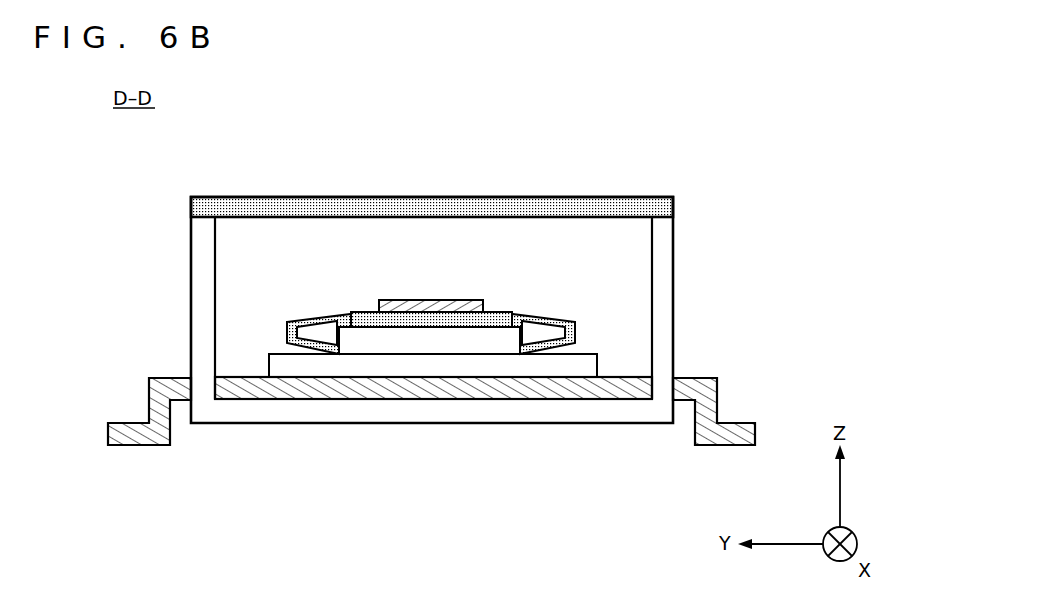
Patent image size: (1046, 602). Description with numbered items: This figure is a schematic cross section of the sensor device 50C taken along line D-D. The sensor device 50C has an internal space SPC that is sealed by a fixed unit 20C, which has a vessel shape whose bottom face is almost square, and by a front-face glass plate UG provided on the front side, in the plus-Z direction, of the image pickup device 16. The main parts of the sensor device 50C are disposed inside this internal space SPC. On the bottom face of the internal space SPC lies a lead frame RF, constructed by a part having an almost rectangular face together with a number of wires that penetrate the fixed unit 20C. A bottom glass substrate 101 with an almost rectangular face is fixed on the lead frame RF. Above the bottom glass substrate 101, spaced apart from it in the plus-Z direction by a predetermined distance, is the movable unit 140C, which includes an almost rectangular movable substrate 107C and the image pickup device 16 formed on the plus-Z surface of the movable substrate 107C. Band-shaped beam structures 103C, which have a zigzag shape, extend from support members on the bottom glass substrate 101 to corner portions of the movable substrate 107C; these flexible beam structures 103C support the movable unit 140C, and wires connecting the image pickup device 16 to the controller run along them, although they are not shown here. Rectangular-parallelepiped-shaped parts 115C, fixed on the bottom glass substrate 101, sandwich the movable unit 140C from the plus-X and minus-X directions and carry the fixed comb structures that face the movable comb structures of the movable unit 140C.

The sensor device 50C is at (639, 172).
The front-face glass plate UG is at (437, 196).
The fixed unit 20C is at (674, 283).
The internal space SPC is at (237, 263).
The rectangular-parallelepiped-shaped part 115C is at (438, 342).
The bottom glass substrate 101 is at (582, 363).
The image pickup device 16 is at (436, 300).
The movable substrate 107C is at (486, 311).
The movable unit 140C is at (377, 297).
The beam structure 103C is at (299, 322).
The lead frame RF is at (705, 377).